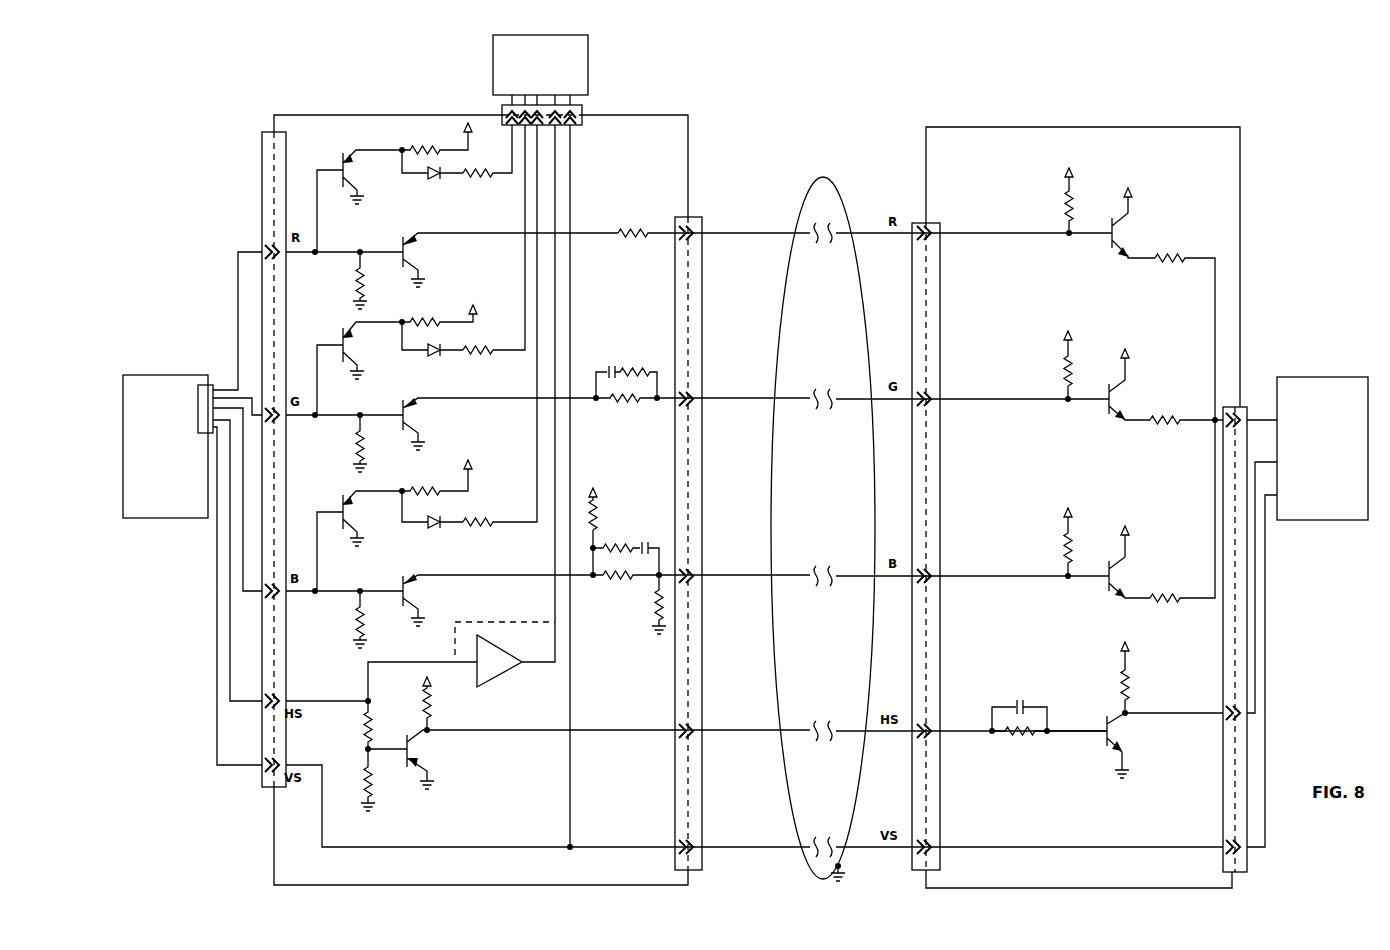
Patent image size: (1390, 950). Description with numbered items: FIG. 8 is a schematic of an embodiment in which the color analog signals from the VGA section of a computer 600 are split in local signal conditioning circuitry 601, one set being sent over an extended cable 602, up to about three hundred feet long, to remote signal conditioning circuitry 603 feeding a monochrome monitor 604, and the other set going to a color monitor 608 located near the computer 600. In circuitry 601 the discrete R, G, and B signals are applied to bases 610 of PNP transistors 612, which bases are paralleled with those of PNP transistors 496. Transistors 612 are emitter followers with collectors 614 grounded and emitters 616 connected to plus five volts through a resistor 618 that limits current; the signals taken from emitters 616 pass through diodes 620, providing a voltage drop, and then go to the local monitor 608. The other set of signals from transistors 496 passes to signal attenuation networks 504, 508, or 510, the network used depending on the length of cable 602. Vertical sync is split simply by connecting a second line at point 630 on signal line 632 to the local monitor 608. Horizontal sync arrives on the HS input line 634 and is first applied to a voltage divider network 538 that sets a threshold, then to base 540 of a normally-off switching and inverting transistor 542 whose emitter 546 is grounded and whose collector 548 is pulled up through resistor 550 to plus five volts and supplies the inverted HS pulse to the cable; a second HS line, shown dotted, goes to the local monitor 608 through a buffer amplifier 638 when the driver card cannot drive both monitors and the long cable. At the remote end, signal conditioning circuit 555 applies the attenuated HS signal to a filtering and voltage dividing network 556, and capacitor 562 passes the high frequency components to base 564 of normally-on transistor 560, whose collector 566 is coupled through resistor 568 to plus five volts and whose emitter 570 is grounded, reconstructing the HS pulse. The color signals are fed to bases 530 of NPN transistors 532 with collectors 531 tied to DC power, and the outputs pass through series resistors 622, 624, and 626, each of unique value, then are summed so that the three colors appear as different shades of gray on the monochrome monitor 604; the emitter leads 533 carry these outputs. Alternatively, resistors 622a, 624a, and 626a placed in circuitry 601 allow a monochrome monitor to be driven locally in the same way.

The PNP transistors 496 is at (426, 252).
The signal attenuation network 504 is at (658, 259).
The signal attenuation network 508 is at (648, 427).
The signal attenuation network 510 is at (616, 607).
The bases 530 is at (1097, 239).
The collectors 531 is at (1134, 216).
The NPN transistors 532 is at (1118, 203).
The emitter lead 533 is at (1122, 258).
The voltage divider network 538 is at (410, 719).
The base 540 is at (400, 762).
The switching and inverting transistor 542 is at (433, 760).
The emitter 546 is at (430, 776).
The collector 548 is at (420, 736).
The pull-up resistor 550 is at (428, 710).
The signal conditioning circuit 555 is at (1090, 698).
The filtering and voltage dividing network 556 is at (1028, 766).
The transistor 560 is at (1132, 733).
The capacitor 562 is at (1008, 700).
The base 564 is at (1102, 734).
The collector 566 is at (1110, 717).
The resistor 568 is at (1132, 687).
The emitter 570 is at (1128, 749).
The computer 600 is at (163, 375).
The signal conditioning circuitry 601 is at (640, 189).
The extended cable 602 is at (792, 181).
The signal conditioning circuitry 603 is at (1002, 189).
The monochrome monitor 604 is at (1310, 520).
The color monitor 608 is at (588, 60).
The bases 610 is at (338, 168).
The PNP transistors 612 is at (362, 185).
The collectors 614 is at (346, 190).
The emitters 616 is at (352, 147).
The resistor 618 is at (422, 146).
The diodes 620 is at (442, 180).
The series resistor 622 is at (1168, 256).
The resistor 622a is at (502, 168).
The series resistor 624 is at (1166, 418).
The resistor 624a is at (476, 348).
The series resistor 626 is at (1164, 596).
The resistor 626a is at (474, 516).
The point 630 is at (576, 848).
The signal line 632 is at (454, 852).
The horizontal sync input line 634 is at (332, 701).
The buffer amplifier 638 is at (496, 677).